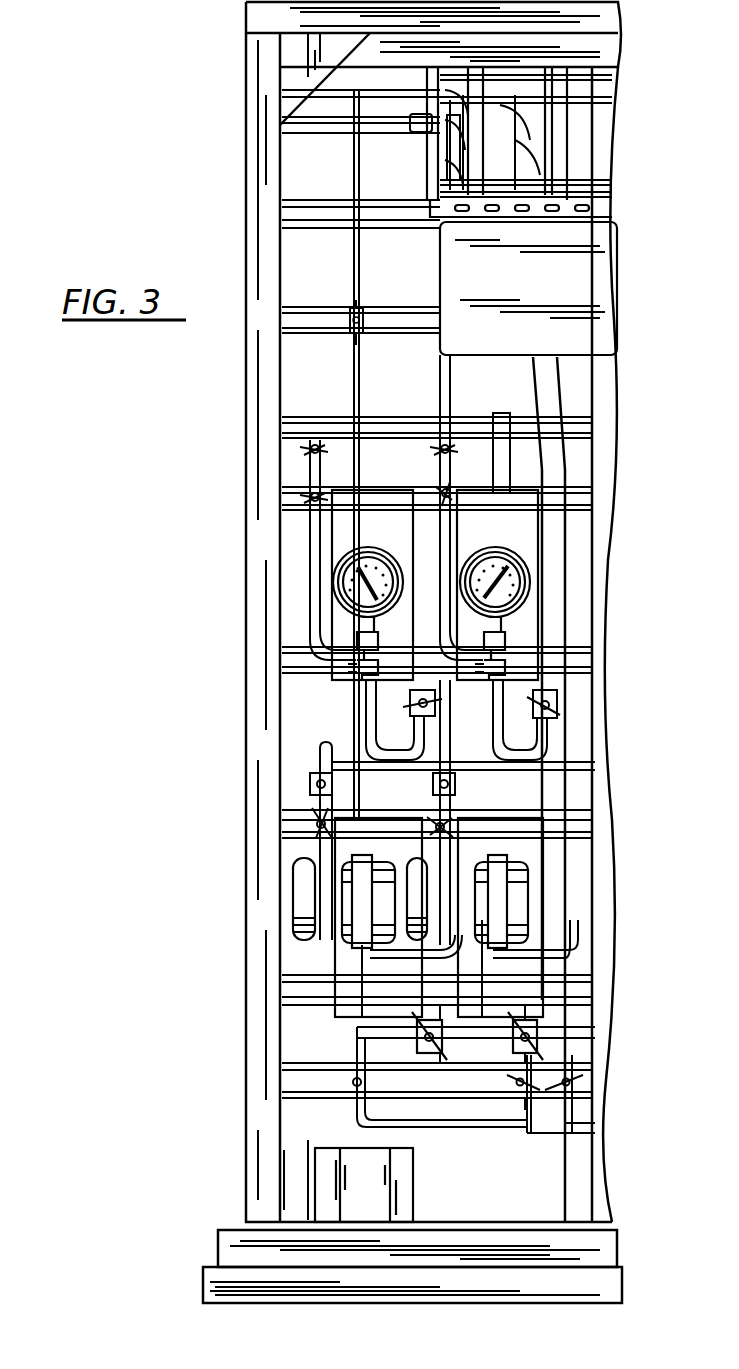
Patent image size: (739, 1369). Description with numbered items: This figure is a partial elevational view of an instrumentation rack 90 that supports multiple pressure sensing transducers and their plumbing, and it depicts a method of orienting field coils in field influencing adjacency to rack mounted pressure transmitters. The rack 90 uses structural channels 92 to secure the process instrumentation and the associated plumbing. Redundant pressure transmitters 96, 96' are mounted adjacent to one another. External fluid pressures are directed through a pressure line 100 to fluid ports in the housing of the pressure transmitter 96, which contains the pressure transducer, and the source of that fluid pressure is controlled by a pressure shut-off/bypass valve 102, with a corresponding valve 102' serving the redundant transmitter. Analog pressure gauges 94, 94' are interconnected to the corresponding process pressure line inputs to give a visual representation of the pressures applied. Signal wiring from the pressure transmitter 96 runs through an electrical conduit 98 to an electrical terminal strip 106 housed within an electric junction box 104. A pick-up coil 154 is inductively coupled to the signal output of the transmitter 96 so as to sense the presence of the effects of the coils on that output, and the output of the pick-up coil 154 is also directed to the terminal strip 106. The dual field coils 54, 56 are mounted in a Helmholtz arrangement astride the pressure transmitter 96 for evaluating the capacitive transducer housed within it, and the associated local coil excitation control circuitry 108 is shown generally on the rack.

The rack 90 is at (246, 66).
The structural channels 92 is at (333, 415).
The analog pressure gauge 94 is at (372, 585).
The analog pressure gauge 94' is at (497, 585).
The field coil 54 is at (418, 856).
The field coil 56 is at (303, 893).
The pressure transmitter 96 is at (293, 911).
The pressure transmitter 96' is at (565, 917).
The electrical conduit 98 is at (410, 963).
The pressure line 100 is at (440, 1010).
The pressure shut-off/bypass valve 102 is at (315, 1044).
The pressure shut-off/bypass valve 102' is at (611, 1040).
The electric junction box 104 is at (456, 158).
The electrical terminal strip 106 is at (455, 105).
The pick-up coil 154 is at (462, 143).
The local coil excitation control circuitry 108 is at (332, 1178).